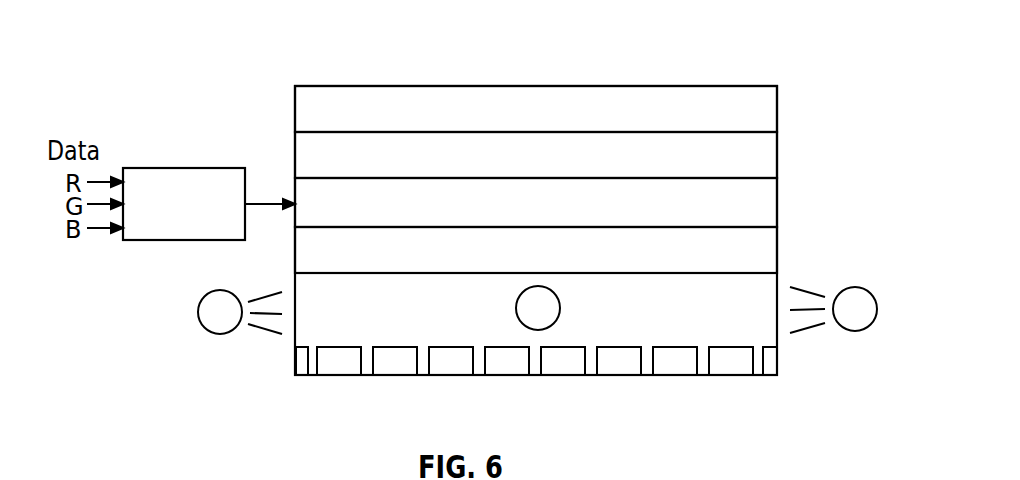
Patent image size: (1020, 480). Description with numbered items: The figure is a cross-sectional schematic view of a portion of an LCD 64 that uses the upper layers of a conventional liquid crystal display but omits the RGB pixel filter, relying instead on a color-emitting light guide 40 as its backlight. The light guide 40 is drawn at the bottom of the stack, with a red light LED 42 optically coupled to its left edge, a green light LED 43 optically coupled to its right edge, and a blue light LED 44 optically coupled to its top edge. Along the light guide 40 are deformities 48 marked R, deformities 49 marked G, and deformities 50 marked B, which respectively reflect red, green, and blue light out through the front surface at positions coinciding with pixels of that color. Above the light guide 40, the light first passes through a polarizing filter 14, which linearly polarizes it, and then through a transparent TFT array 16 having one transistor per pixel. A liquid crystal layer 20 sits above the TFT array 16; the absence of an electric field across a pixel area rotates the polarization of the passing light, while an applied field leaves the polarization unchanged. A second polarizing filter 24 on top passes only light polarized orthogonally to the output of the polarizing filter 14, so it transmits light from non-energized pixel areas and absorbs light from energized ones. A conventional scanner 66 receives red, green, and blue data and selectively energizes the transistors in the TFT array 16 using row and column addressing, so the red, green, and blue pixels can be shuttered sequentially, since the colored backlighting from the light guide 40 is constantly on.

The LCD 64 is at (742, 50).
The polarizing filter 24 is at (777, 108).
The liquid crystal layer 20 is at (777, 155).
The TFT array 16 is at (777, 201).
The polarizing filter 14 is at (777, 247).
The scanner 66 is at (180, 168).
The red light LED 42 is at (222, 334).
The green light LED 43 is at (855, 331).
The blue light LED 44 is at (516, 304).
The light guide 40 is at (524, 387).
The deformities for reflecting red light 48 is at (327, 376).
The deformities for reflecting green light 49 is at (382, 376).
The deformities for reflecting blue light 50 is at (436, 376).